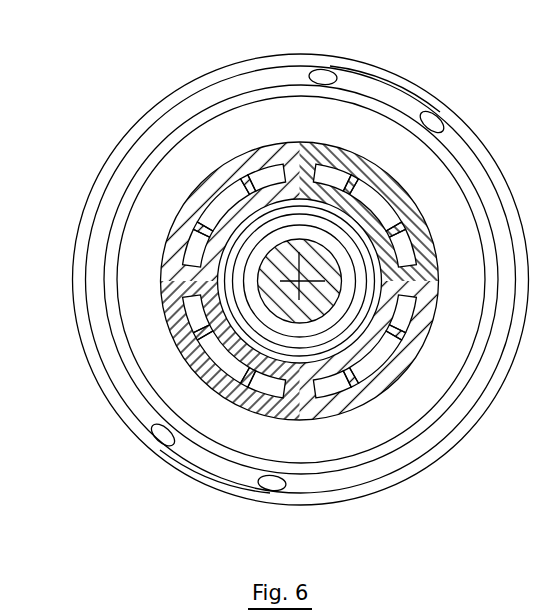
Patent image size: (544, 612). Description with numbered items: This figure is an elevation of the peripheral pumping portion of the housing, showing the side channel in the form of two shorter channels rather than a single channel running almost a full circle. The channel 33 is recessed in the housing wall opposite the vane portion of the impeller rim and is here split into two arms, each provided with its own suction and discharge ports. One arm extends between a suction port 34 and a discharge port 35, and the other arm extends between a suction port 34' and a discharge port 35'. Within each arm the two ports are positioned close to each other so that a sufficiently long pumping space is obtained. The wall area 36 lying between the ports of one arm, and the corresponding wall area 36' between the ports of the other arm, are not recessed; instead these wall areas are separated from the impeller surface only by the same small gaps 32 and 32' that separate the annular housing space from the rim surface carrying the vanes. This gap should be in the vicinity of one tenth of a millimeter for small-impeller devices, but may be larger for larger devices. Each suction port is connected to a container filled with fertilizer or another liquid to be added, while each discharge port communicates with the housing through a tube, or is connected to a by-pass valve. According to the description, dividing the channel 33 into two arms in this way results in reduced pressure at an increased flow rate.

The narrow gap 32 is at (249, 279).
The narrow gap 32' is at (265, 279).
The channel 33 is at (92, 260).
The suction port 34 is at (364, 55).
The suction port 34' is at (227, 510).
The discharge port 35 is at (124, 453).
The discharge port 35' is at (475, 106).
The wall area 36 is at (407, 81).
The wall area 36' is at (191, 485).